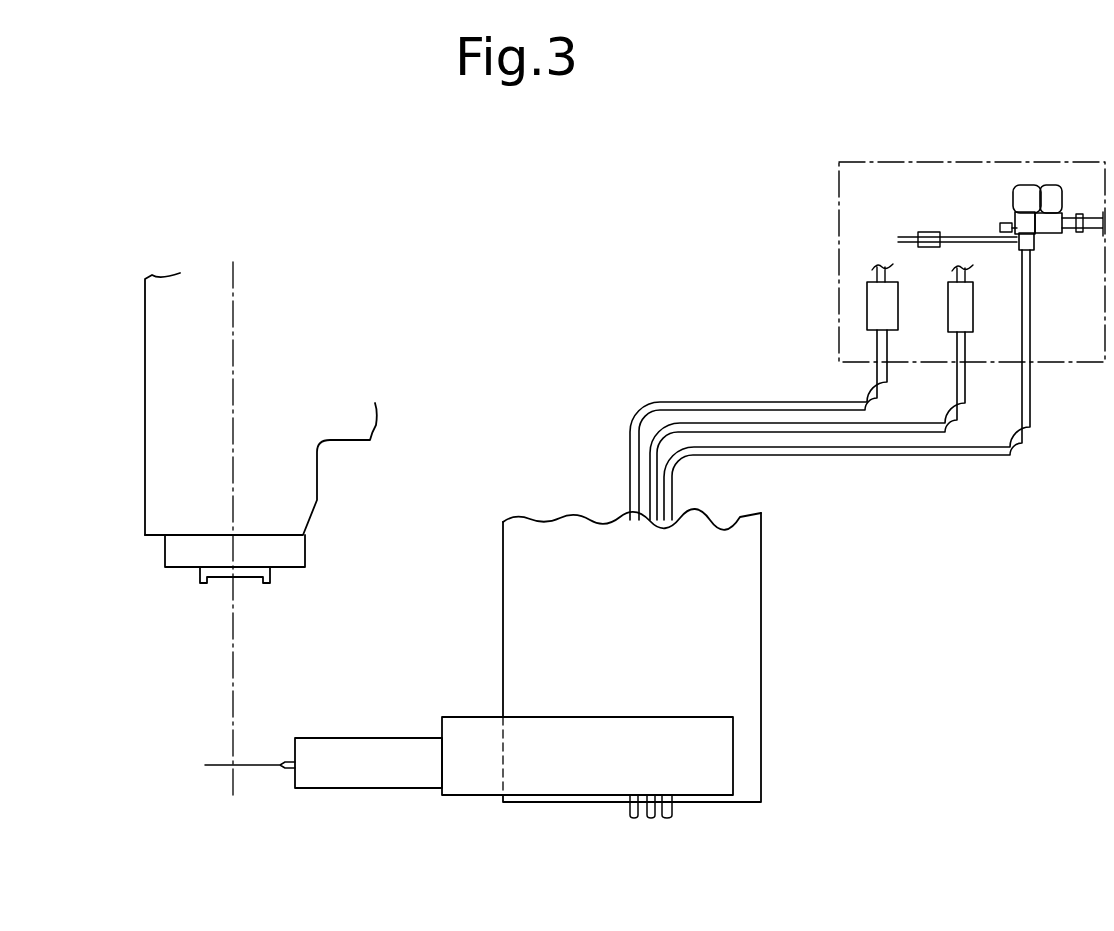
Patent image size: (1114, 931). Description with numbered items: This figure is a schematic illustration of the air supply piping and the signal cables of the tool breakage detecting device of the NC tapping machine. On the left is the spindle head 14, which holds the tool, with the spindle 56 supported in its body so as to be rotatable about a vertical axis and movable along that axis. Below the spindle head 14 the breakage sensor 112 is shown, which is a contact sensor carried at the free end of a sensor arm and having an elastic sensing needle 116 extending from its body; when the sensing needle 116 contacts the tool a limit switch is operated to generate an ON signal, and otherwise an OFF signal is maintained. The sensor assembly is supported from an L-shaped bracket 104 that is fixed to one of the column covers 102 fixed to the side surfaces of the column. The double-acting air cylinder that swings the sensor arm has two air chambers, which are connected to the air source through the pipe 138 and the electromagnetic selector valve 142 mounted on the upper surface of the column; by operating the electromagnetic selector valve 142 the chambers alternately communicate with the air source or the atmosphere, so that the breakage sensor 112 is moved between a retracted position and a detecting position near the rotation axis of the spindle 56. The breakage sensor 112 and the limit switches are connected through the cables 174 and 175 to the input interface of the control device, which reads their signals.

The spindle head 14 is at (352, 480).
The spindle 56 is at (270, 572).
The column cover 102 is at (733, 672).
The bracket 104 is at (597, 733).
The breakage sensor 112 is at (322, 714).
The sensing needle 116 is at (263, 766).
The pipe 138 is at (933, 450).
The electromagnetic selector valve 142 is at (1024, 195).
The cable 174 is at (708, 404).
The cable 175 is at (803, 428).